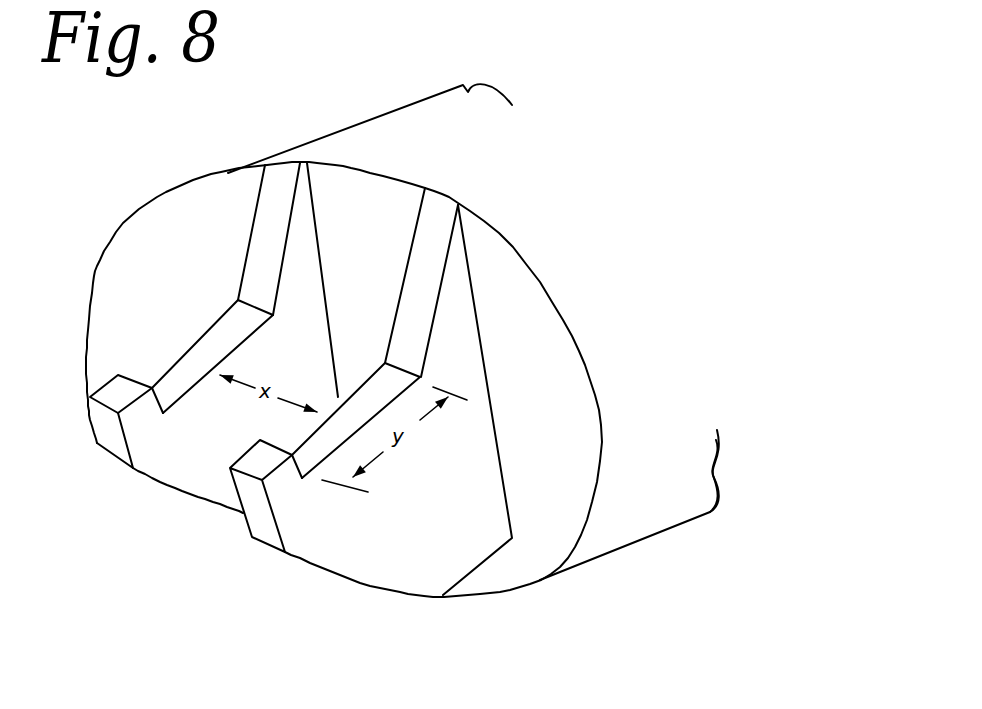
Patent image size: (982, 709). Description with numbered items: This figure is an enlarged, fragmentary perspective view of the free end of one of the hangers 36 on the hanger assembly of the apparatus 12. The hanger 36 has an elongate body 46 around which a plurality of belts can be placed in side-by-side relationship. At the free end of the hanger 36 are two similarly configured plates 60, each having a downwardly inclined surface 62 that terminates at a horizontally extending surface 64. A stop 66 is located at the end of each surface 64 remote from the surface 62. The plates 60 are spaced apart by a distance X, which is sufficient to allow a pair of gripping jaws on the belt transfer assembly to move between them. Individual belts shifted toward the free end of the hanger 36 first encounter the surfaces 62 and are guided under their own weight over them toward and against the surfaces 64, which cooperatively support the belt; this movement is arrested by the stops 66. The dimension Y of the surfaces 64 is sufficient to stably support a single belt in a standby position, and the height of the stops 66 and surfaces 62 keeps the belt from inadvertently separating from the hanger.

The medical device / catheter assembly 12 is at (788, 541).
The hanger 36 is at (636, 505).
The elongate body 46 is at (757, 458).
The plate 60 is at (380, 317).
The downwardly inclined surface 62 is at (378, 329).
The horizontally extending surface 64 is at (286, 363).
The stop 66 is at (194, 511).